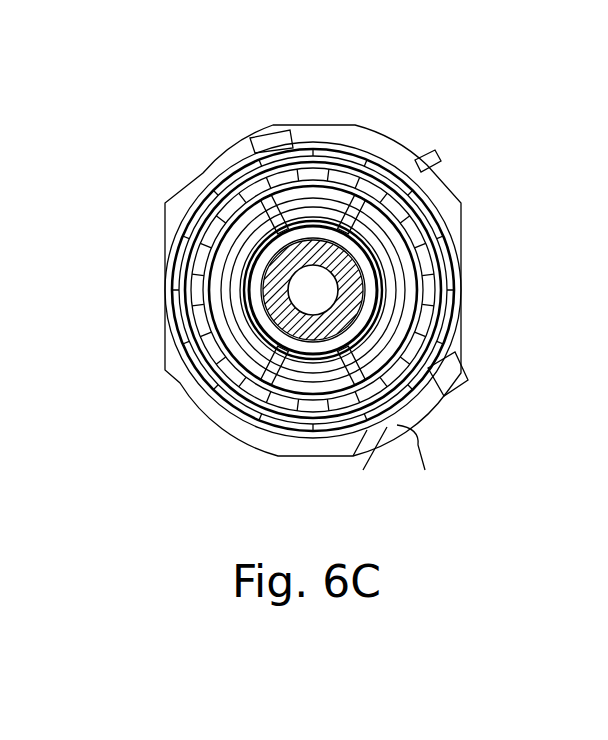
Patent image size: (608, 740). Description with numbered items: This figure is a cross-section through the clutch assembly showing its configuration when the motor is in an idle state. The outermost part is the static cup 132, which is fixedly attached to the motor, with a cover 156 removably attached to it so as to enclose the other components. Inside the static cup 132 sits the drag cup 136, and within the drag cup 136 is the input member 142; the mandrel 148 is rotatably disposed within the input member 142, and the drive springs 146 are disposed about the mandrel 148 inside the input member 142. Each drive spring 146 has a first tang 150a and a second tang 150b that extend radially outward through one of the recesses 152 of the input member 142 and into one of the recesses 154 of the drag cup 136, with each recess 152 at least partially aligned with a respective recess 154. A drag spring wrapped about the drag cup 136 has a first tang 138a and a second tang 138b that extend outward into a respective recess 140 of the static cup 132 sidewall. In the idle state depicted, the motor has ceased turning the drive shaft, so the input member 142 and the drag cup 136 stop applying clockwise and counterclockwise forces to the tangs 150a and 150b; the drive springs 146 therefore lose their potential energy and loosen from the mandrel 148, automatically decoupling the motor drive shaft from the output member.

The static cup 132 is at (210, 168).
The drag cup 136 is at (420, 278).
The first tang 138a is at (430, 167).
The second tang 138b is at (417, 395).
The recess 140 is at (400, 423).
The input member 142 is at (385, 327).
The first spring 146 is at (247, 288).
The mandrel 148 is at (190, 197).
The first tang 150a is at (245, 190).
The second tang 150b is at (357, 200).
The recess 152 is at (412, 188).
The recess 154 is at (326, 200).
The cover 156 is at (177, 340).